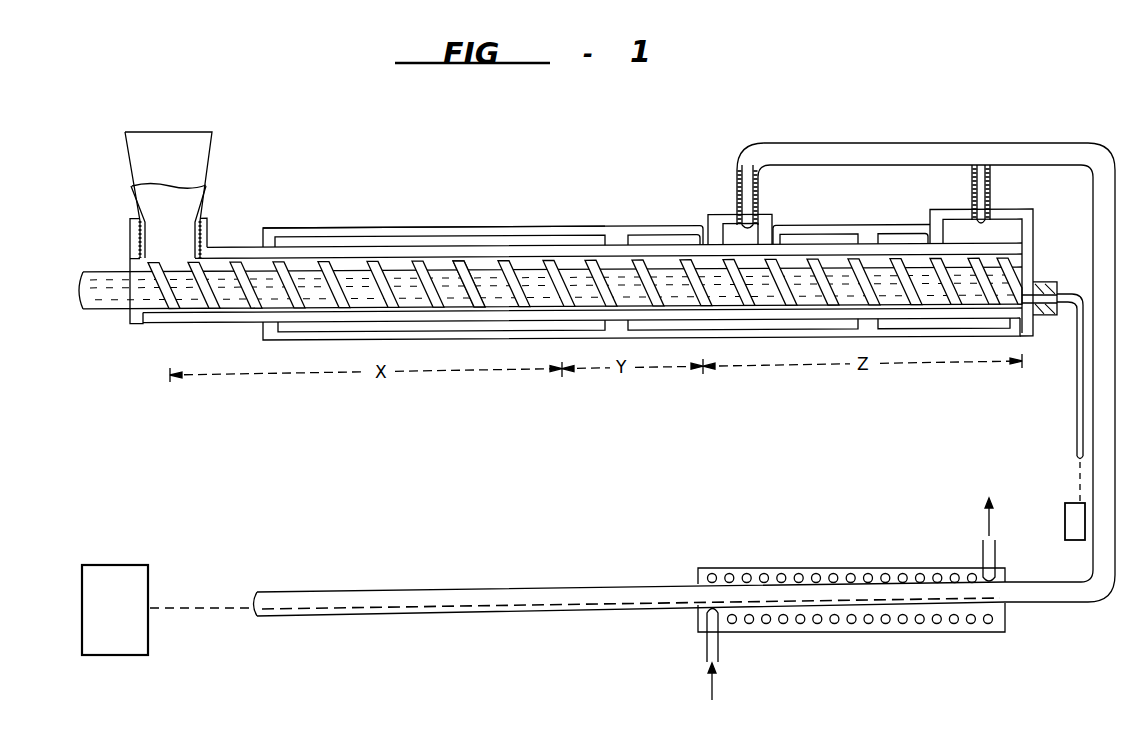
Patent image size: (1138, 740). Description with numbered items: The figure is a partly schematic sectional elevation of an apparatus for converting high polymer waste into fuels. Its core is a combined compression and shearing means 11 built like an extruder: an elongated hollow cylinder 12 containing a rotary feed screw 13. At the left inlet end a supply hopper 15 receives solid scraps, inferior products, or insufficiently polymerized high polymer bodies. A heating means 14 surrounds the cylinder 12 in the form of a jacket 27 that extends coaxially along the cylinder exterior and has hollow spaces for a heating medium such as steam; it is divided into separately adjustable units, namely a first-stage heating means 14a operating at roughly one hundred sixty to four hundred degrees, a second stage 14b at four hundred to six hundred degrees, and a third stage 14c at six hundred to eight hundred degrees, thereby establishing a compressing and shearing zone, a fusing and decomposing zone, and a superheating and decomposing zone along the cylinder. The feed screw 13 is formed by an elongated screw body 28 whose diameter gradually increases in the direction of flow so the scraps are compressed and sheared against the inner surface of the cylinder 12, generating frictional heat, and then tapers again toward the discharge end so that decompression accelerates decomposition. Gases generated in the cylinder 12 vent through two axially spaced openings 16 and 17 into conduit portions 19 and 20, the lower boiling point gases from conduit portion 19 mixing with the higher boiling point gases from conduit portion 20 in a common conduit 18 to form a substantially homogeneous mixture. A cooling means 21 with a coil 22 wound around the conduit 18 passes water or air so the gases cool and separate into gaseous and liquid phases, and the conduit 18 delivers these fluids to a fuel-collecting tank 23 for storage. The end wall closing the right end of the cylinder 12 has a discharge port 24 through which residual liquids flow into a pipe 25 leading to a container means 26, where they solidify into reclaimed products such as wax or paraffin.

The combined compression and shearing means 11 is at (586, 215).
The elongated hollow cylinder 12 is at (517, 252).
The rotary feed screw 13 is at (485, 273).
The heating means 14 is at (438, 236).
The first-stage heating means 14a is at (352, 230).
The second stage heating means 14b is at (648, 228).
The third stage heating means 14c is at (892, 230).
The supply hopper 15 is at (198, 168).
The opening 16 is at (760, 220).
The opening 17 is at (999, 220).
The common conduit 18 is at (1100, 218).
The conduit portion 19 is at (737, 192).
The conduit portion 20 is at (970, 190).
The cooling means 21 is at (862, 573).
The coil 22 is at (870, 622).
The fuel-collecting tank 23 is at (138, 573).
The discharge port 24 is at (1040, 285).
The pipe 25 is at (1077, 396).
The container means 26 is at (1068, 521).
The jacket 27 is at (398, 230).
The screw body 28 is at (472, 306).